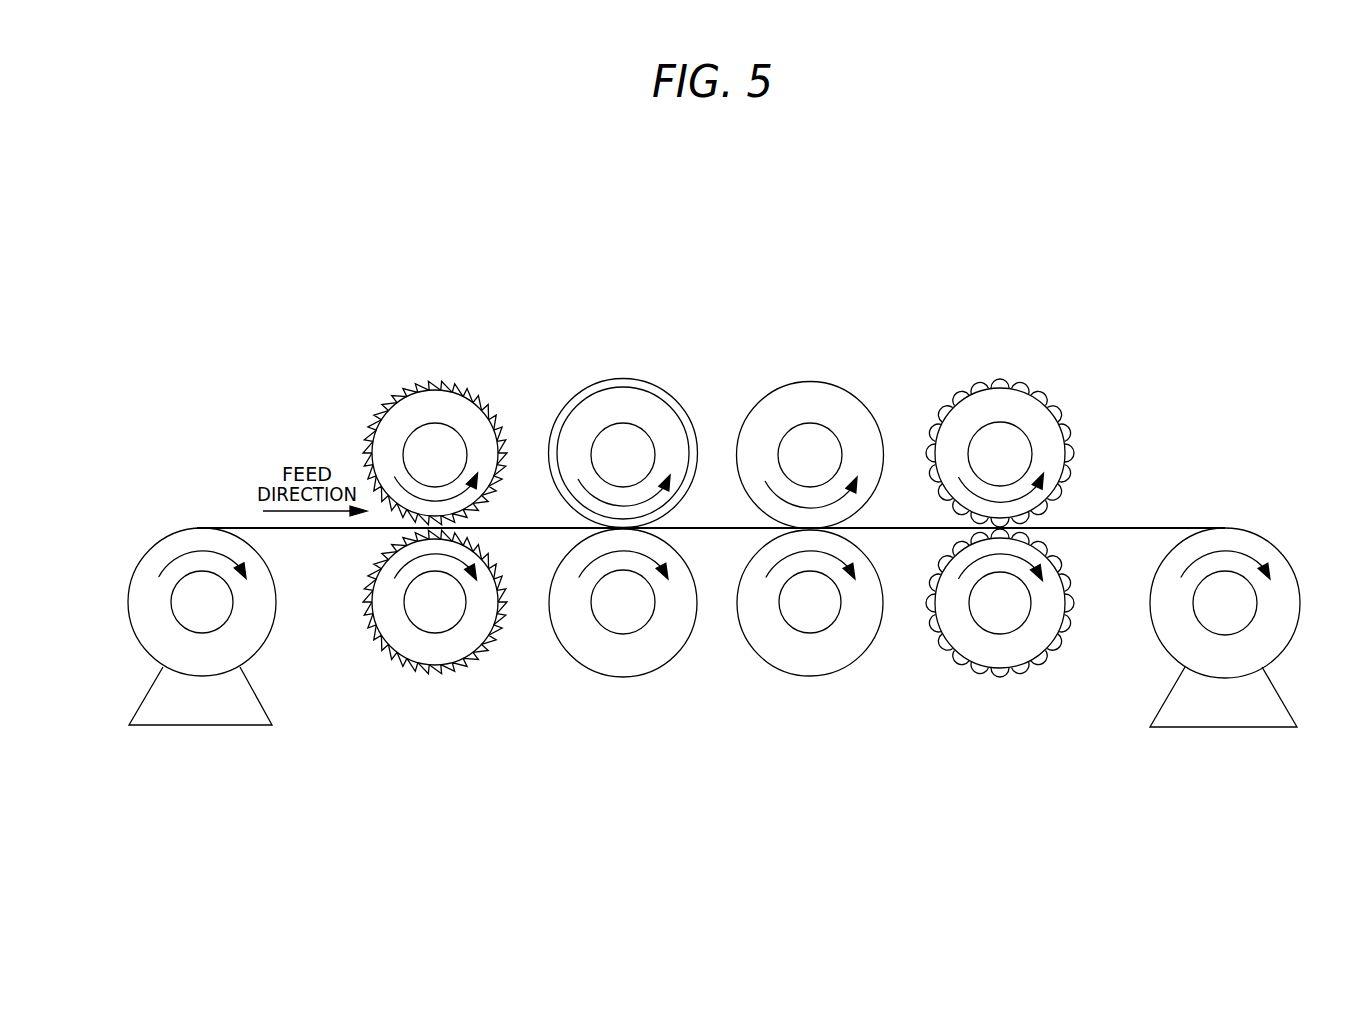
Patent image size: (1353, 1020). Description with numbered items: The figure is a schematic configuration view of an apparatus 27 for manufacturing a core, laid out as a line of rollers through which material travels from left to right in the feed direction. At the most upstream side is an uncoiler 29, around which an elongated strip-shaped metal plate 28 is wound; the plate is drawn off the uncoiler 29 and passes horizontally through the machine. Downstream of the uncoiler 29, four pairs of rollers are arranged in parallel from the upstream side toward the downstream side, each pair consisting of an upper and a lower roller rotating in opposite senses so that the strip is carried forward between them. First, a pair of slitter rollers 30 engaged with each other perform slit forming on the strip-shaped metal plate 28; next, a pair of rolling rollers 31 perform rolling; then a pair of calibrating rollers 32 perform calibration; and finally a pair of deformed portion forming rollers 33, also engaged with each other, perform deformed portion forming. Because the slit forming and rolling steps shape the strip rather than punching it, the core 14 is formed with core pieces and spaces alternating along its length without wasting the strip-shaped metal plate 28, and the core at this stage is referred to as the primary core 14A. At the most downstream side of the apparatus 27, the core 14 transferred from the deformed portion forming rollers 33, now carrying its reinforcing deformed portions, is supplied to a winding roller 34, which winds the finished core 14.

The core 14 is at (1122, 528).
The primary core 14A is at (716, 528).
The apparatus for manufacturing a core 27 is at (722, 305).
The strip-shaped metal plate 28 is at (252, 528).
The uncoiler 29 is at (172, 545).
The slitter rollers 30 is at (422, 385).
The rolling rollers 31 is at (622, 378).
The calibrating rollers 32 is at (807, 381).
The deformed portion forming rollers 33 is at (1005, 388).
The winding roller 34 is at (1243, 542).